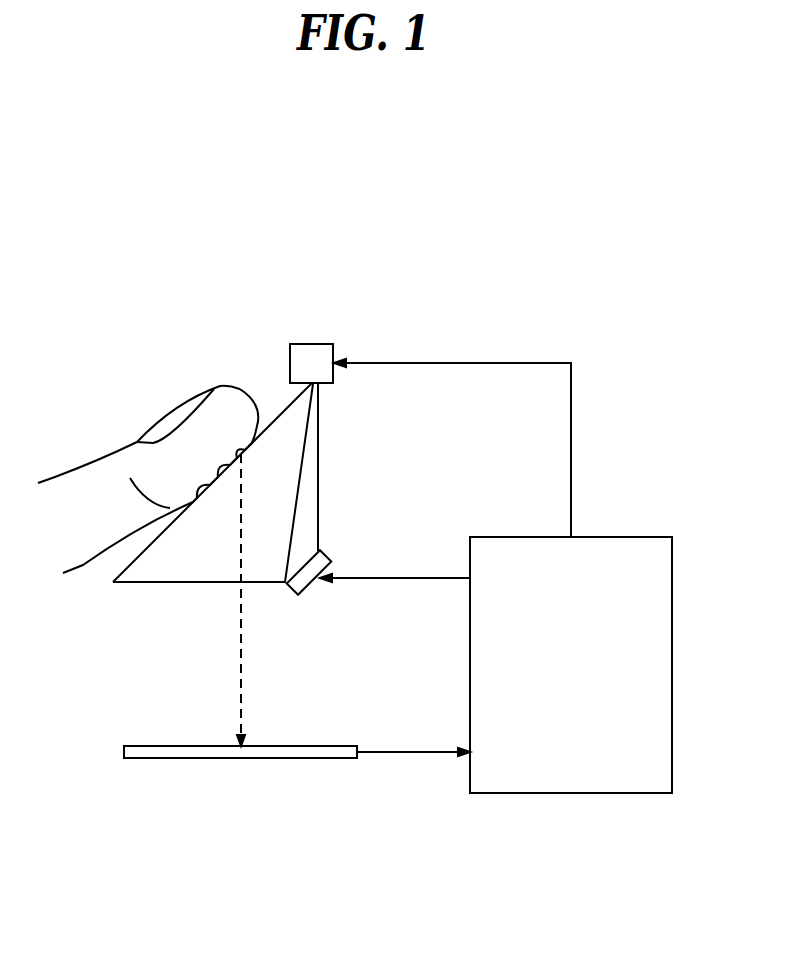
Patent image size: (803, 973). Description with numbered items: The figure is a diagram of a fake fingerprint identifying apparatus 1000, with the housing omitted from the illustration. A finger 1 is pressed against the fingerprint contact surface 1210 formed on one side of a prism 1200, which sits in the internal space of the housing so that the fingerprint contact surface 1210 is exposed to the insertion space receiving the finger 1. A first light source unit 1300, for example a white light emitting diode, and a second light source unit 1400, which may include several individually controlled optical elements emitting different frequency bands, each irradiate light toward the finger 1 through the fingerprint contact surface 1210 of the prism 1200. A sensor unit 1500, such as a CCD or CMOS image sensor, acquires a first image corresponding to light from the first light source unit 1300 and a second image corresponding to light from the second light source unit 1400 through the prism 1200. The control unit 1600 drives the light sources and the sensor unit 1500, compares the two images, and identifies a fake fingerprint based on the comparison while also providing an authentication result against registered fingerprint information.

The fake fingerprint identifying apparatus 1000 is at (513, 217).
The finger 1 is at (95, 470).
The fingerprint contact surface 1210 is at (150, 545).
The prism 1200 is at (302, 463).
The second light source unit 1400 is at (330, 344).
The first light source unit 1300 is at (305, 590).
The sensor unit 1500 is at (345, 745).
The control unit 1600 is at (660, 537).